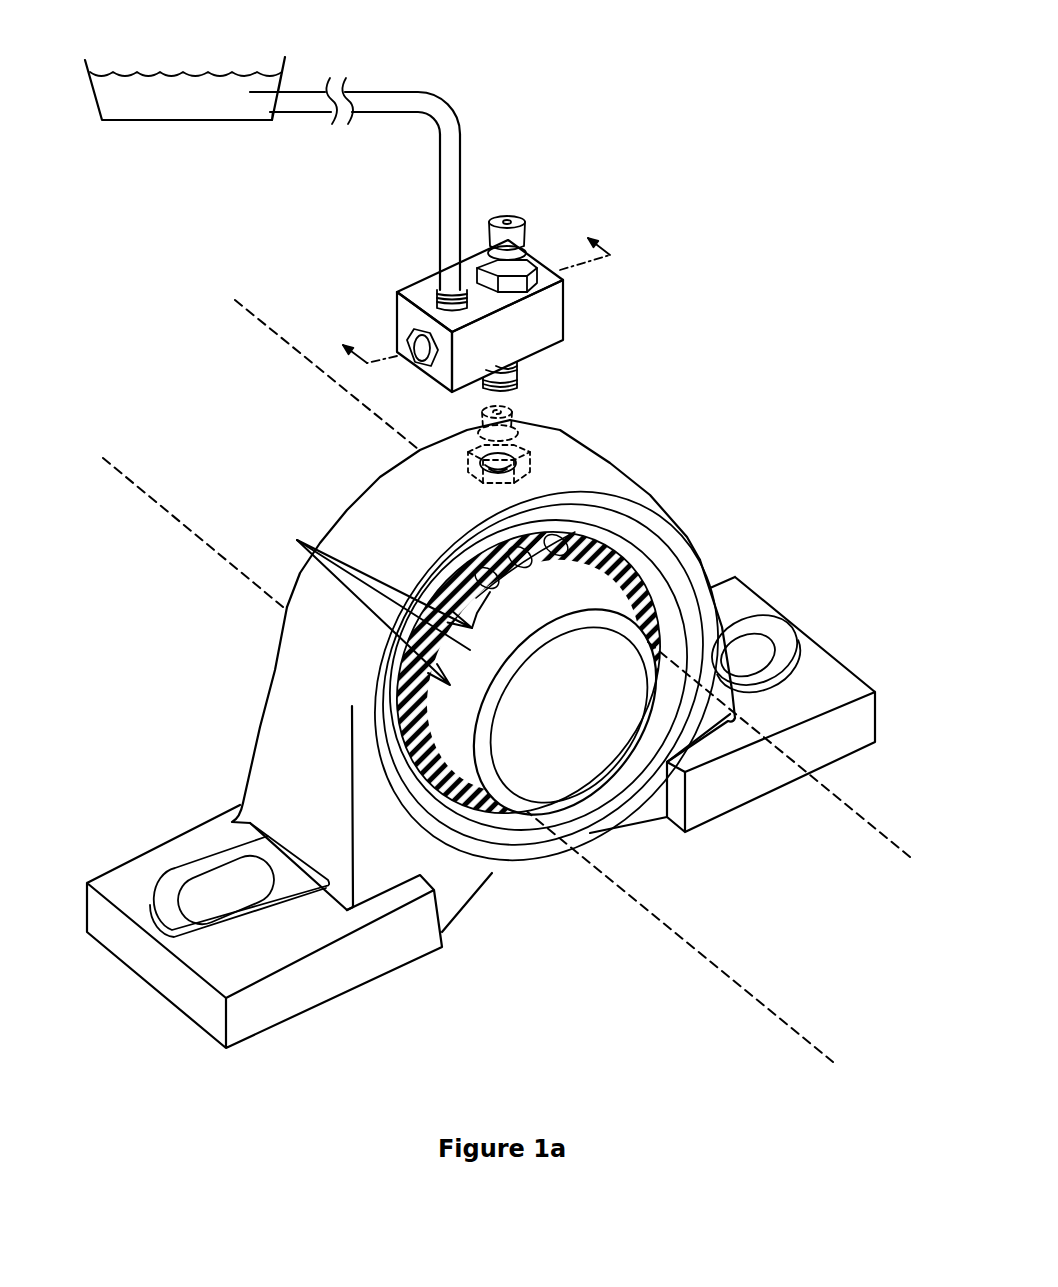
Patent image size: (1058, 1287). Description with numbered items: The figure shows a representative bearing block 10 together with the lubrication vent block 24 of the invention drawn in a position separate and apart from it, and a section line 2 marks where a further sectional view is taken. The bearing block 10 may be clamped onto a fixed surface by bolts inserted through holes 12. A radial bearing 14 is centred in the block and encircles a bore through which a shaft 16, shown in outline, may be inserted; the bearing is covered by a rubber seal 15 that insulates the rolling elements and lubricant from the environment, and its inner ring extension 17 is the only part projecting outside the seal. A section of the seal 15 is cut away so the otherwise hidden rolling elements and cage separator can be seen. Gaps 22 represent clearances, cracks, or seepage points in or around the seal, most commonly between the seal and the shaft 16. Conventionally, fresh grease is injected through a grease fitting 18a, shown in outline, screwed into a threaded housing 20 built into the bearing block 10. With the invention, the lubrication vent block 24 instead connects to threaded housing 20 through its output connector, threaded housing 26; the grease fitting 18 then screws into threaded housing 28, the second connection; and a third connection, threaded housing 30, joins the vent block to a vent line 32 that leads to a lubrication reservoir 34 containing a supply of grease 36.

The bearing block 10 is at (213, 708).
The holes 12 is at (200, 883).
The radial bearing 14 is at (470, 650).
The seal 15 is at (404, 721).
The shaft 16 is at (847, 807).
The inner ring extension 17 is at (568, 812).
The grease fitting 18 is at (507, 220).
The grease fitting 18a is at (513, 417).
The threaded housing 20 is at (517, 457).
The gaps 22 is at (370, 600).
The lubrication vent block 24 is at (620, 192).
The threaded housing 26 is at (522, 360).
The threaded housing 28 is at (530, 257).
The threaded housing 30 is at (437, 285).
The vent line 32 is at (445, 100).
The lubrication reservoir 34 is at (168, 122).
The grease 36 is at (160, 72).
The section line 2- 2 is at (467, 290).